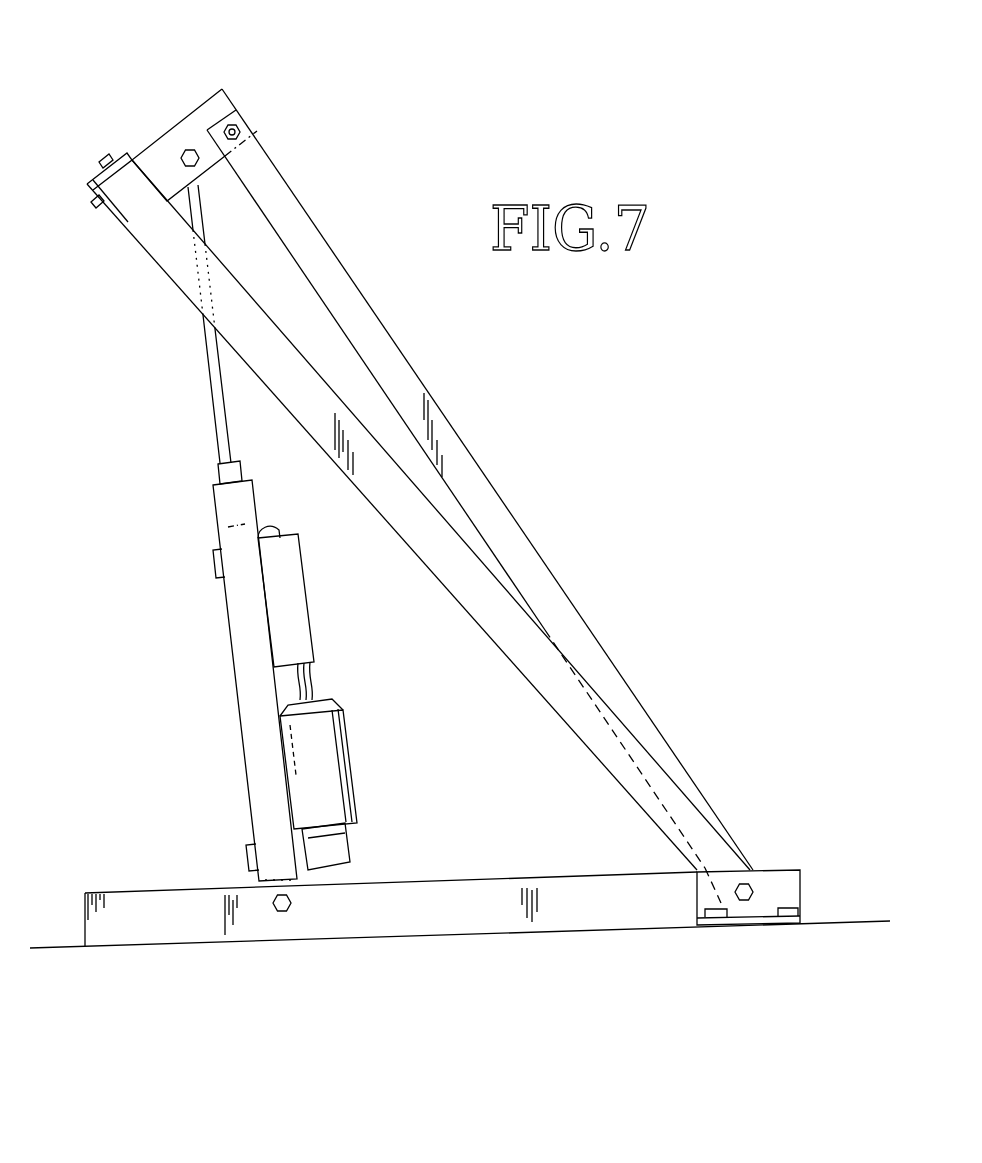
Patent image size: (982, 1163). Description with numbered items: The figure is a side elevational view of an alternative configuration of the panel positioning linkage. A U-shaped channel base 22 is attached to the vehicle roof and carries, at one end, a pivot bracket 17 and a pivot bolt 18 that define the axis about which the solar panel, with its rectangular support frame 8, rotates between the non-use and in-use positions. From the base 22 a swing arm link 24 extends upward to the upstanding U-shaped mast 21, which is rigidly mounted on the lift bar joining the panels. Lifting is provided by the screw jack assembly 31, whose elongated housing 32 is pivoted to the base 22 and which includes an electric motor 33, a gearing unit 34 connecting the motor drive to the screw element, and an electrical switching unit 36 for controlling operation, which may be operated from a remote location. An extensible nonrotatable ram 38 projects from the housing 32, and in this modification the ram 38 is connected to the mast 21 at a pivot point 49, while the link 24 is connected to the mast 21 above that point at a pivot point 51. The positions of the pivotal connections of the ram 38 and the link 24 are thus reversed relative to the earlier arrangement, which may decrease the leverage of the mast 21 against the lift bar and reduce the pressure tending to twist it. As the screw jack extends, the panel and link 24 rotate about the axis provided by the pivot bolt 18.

The rectangular support frame 8 is at (495, 633).
The swing arm link 24 is at (497, 512).
The U-shaped mast 21 is at (153, 157).
The pivot point 49 is at (191, 149).
The pivot point 51 is at (241, 130).
The extensible nonrotatable ram 38 is at (212, 396).
The screw jack assembly 31 is at (286, 680).
The elongated housing 32 is at (250, 741).
The electrical switching unit 36 is at (292, 612).
The electric motor 33 is at (338, 775).
The gearing unit 34 is at (345, 853).
The U-shaped channel base 22 is at (400, 912).
The pivot bracket 17 is at (770, 906).
The pivot bolt 18 is at (752, 866).